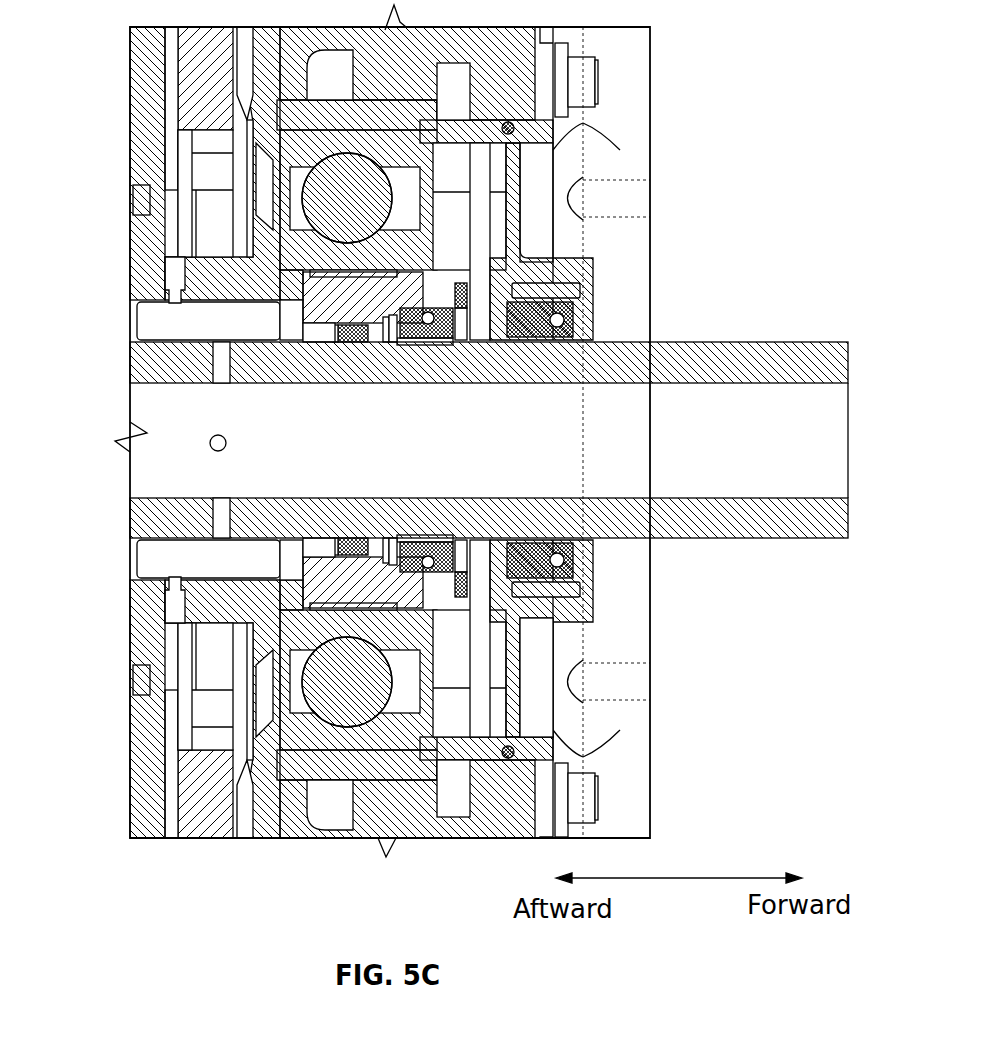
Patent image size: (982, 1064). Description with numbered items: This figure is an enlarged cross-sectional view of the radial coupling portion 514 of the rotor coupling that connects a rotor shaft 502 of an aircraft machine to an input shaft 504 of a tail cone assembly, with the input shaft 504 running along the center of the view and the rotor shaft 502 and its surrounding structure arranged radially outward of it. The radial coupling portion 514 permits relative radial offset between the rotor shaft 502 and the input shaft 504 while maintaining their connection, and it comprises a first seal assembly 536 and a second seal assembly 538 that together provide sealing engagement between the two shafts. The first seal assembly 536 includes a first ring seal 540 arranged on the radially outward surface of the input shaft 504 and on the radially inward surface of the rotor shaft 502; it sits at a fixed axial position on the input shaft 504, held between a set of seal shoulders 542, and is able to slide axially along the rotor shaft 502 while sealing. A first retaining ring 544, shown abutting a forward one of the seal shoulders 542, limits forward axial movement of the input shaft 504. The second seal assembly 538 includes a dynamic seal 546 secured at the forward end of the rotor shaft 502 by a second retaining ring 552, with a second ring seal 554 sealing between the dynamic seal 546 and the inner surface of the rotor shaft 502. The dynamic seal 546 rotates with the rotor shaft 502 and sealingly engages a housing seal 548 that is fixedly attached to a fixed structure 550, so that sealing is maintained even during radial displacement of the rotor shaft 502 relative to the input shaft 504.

The rotor shaft 502 is at (147, 282).
The input shaft 504 is at (722, 356).
The radial coupling portion 514 is at (112, 166).
The first seal assembly 536 is at (320, 347).
The second seal assembly 538 is at (487, 355).
The first ring seal 540 is at (362, 342).
The seal shoulders 542 is at (335, 342).
The first retaining ring 544 is at (393, 342).
The dynamic seal 546 is at (448, 338).
The housing seal 548 is at (535, 340).
The fixed structure 550 is at (548, 680).
The second retaining ring 552 is at (462, 283).
The second ring seal 554 is at (425, 312).